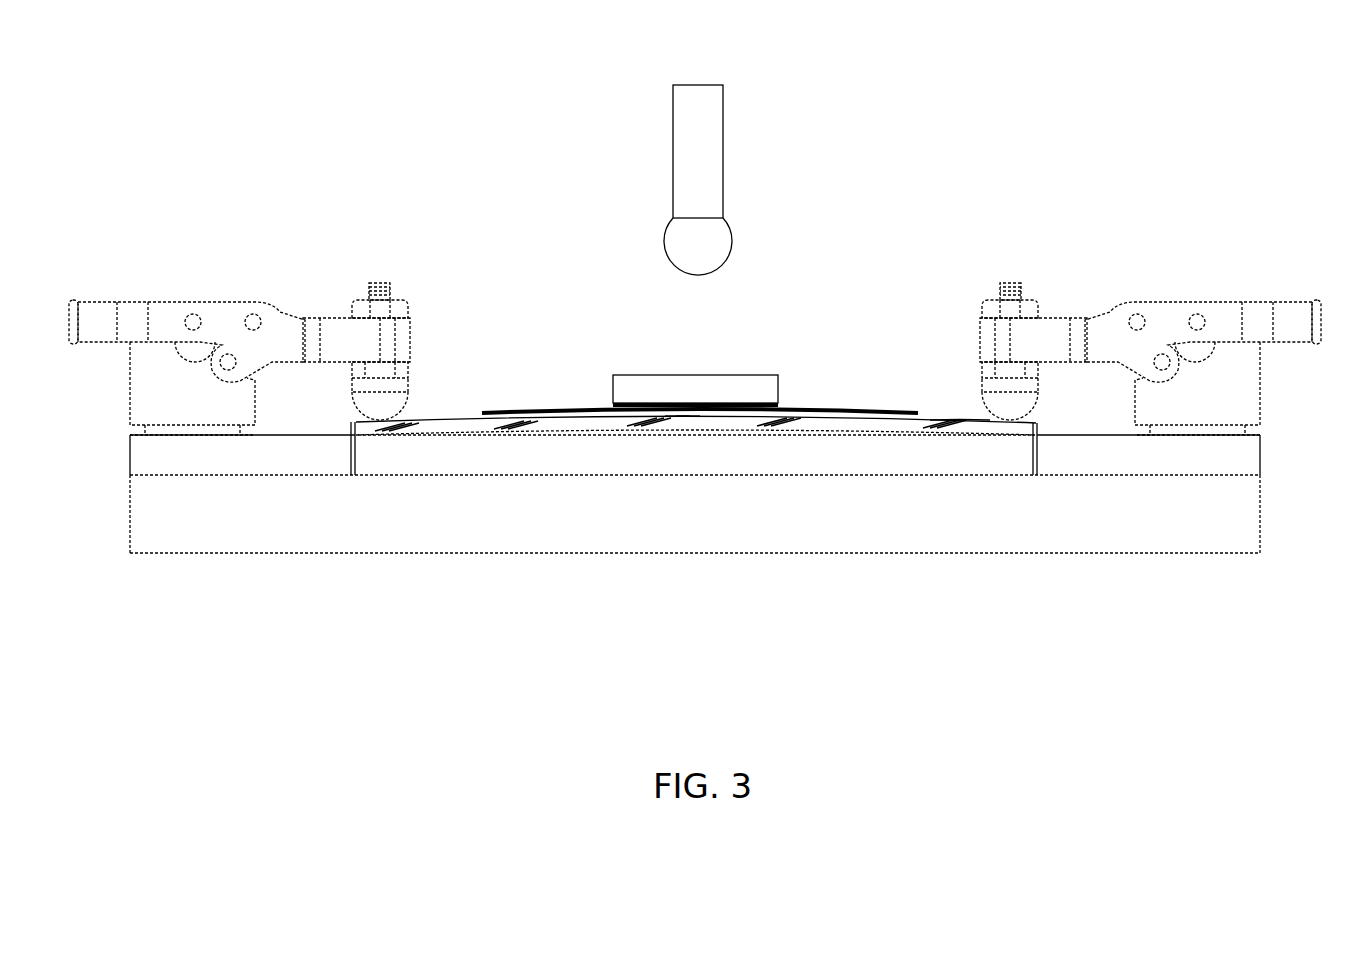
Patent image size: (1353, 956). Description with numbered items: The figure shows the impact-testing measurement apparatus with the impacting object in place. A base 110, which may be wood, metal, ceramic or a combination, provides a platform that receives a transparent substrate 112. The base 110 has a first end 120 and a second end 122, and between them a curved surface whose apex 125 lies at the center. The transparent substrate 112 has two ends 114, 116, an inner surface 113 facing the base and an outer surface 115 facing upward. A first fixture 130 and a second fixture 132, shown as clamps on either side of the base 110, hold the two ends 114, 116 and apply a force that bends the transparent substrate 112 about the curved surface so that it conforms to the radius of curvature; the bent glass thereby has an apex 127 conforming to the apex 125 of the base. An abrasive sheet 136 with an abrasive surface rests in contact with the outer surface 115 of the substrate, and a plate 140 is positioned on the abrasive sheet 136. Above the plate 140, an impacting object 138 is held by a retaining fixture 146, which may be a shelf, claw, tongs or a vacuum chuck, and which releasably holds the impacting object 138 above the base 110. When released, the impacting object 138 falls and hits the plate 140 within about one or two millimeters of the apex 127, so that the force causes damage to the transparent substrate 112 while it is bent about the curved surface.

The base 110 is at (500, 572).
The transparent substrate 112 is at (437, 418).
The inner surface 113 is at (775, 428).
The first end 114 is at (353, 437).
The outer surface 115 is at (945, 420).
The second end 116 is at (1038, 437).
The first end of base 120 is at (350, 455).
The second end of base 122 is at (1052, 455).
The apex of curved surface 125 is at (683, 428).
The apex of substrate 127 is at (678, 410).
The first fixture 130 is at (292, 320).
The second fixture 132 is at (1225, 313).
The abrasive sheet 136 is at (537, 405).
The impacting object 138 is at (713, 237).
The plate 140 is at (633, 375).
The retaining fixture 146 is at (723, 150).